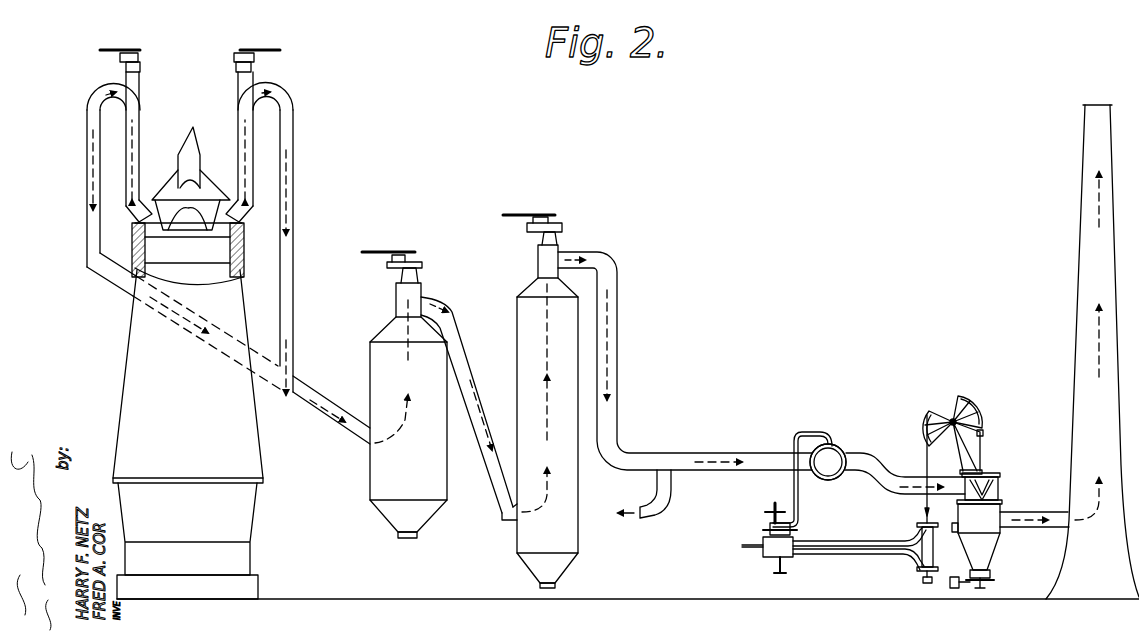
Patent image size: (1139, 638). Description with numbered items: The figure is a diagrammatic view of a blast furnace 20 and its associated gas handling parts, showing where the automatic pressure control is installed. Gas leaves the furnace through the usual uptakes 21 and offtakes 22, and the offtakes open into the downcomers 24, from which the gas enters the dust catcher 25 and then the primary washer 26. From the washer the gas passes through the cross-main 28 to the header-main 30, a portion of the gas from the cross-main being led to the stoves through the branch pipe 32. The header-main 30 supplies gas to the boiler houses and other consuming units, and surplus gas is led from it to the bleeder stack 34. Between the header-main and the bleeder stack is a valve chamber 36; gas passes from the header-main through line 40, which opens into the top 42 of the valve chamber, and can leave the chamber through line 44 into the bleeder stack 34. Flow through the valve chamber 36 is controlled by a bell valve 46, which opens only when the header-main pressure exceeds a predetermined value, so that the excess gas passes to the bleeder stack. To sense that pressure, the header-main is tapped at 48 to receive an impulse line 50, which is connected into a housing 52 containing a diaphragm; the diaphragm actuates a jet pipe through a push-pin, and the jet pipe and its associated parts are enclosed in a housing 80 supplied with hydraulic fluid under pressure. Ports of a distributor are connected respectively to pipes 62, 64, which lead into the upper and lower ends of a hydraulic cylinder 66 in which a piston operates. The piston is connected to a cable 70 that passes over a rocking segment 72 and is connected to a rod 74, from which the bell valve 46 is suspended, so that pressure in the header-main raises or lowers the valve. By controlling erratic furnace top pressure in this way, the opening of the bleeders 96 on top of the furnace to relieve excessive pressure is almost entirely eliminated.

The blast furnace 20 is at (135, 406).
The uptakes 21 is at (137, 130).
The offtakes 22 is at (107, 92).
The downcomers 24 is at (128, 292).
The dust catcher 25 is at (385, 465).
The primary washer 26 is at (530, 318).
The cross-main 28 is at (610, 440).
The header-main 30 is at (833, 481).
The branch pipe 32 is at (660, 510).
The bleeder stack 34 is at (1083, 296).
The valve chamber 36 is at (981, 541).
The line 40 is at (862, 458).
The top of valve chamber 42 is at (996, 489).
The line 44 is at (1017, 516).
The bell valve 46 is at (990, 475).
The tap 48 is at (836, 445).
The impulse line 50 is at (796, 483).
The housing 52 is at (770, 520).
The pipe 62 is at (870, 537).
The pipe 64 is at (850, 550).
The hydraulic cylinder 66 is at (923, 548).
The cable 70 is at (927, 458).
The rocking segment 72 is at (945, 415).
The rod 74 is at (985, 440).
The housing 80 is at (771, 550).
The bleeders 96 is at (237, 58).